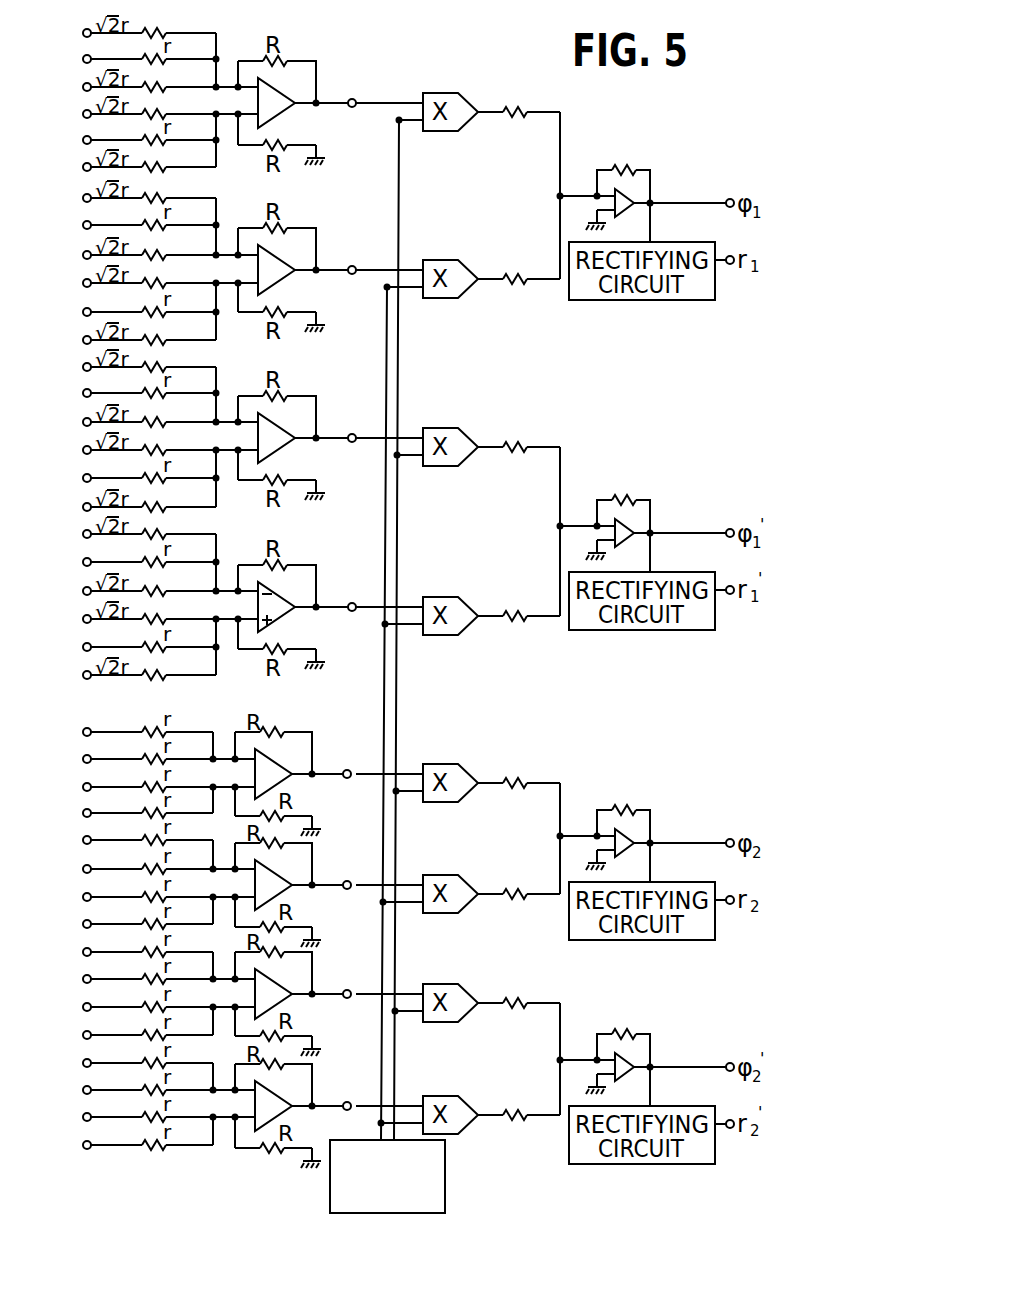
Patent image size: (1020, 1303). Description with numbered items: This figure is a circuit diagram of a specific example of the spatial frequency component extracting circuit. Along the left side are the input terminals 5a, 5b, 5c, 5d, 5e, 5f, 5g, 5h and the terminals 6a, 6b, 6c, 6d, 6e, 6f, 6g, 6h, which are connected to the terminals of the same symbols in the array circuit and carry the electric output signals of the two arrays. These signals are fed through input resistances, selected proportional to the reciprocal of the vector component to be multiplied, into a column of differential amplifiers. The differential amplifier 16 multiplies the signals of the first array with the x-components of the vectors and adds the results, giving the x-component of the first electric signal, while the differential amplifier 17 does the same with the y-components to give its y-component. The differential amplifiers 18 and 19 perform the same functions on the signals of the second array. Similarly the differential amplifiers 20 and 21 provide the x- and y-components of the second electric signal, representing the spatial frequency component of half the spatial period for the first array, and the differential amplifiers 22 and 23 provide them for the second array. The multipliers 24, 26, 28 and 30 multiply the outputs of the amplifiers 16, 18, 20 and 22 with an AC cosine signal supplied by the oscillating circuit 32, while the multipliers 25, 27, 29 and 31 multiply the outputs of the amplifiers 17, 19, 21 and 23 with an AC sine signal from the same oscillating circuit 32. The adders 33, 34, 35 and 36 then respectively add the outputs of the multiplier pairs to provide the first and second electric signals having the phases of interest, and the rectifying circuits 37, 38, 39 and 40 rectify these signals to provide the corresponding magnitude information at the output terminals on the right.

The terminal 5a is at (130, 389).
The terminal 5b is at (130, 460).
The terminal 5c is at (130, 500).
The terminal 5d is at (130, 502).
The terminal 5e is at (130, 443).
The terminal 5f is at (130, 514).
The terminal 5g is at (130, 556).
The terminal 5h is at (130, 475).
The terminal 6a is at (130, 666).
The terminal 6b is at (130, 739).
The terminal 6c is at (130, 778).
The terminal 6d is at (130, 780).
The terminal 6e is at (130, 722).
The terminal 6f is at (130, 795).
The terminal 6g is at (130, 835).
The terminal 6h is at (130, 752).
The differential amplifier 16 is at (328, 68).
The differential amplifier 17 is at (328, 235).
The differential amplifier 18 is at (328, 403).
The differential amplifier 19 is at (328, 572).
The differential amplifier 20 is at (328, 727).
The differential amplifier 21 is at (328, 839).
The differential amplifier 22 is at (328, 948).
The differential amplifier 23 is at (328, 1060).
The multiplier 24 is at (466, 125).
The multiplier 25 is at (468, 269).
The multiplier 26 is at (466, 460).
The multiplier 27 is at (468, 606).
The multiplier 28 is at (466, 796).
The multiplier 29 is at (468, 885).
The multiplier 30 is at (466, 1016).
The multiplier 31 is at (465, 1108).
The oscillating circuit 32 is at (445, 1165).
The adder 33 is at (617, 158).
The adder 34 is at (619, 488).
The adder 35 is at (618, 800).
The adder 36 is at (615, 1026).
The rectifying circuit 37 is at (637, 300).
The rectifying circuit 38 is at (634, 630).
The rectifying circuit 39 is at (648, 940).
The rectifying circuit 40 is at (637, 1164).